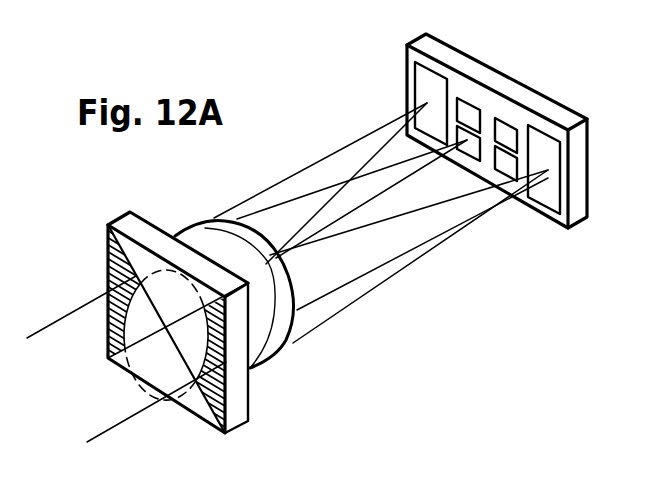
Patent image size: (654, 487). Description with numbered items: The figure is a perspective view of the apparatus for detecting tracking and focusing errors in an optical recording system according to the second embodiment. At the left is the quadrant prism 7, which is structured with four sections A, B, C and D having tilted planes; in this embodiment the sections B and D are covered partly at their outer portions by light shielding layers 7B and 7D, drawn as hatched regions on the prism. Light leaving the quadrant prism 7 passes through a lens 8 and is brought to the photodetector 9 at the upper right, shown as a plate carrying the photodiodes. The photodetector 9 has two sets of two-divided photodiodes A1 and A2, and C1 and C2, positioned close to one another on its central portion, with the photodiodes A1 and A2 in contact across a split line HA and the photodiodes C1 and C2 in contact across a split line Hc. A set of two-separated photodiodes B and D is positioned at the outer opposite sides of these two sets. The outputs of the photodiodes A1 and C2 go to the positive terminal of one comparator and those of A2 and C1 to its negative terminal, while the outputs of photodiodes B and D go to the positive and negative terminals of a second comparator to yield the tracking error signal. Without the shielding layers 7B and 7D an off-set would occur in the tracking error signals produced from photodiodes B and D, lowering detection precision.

The quadrant prism 7 is at (108, 222).
The section A of quadrant prism A is at (134, 252).
The section B of quadrant prism / photodiode B is at (433, 82).
The section C of quadrant prism C is at (193, 402).
The section D of quadrant prism / photodiode D is at (552, 187).
The light shielding layer 7B is at (100, 310).
The light shielding layer 7D is at (248, 417).
The lens 8 is at (208, 224).
The photodetector 9 is at (407, 69).
The two-divided photodiode A1 is at (465, 110).
The two-divided photodiode A2 is at (462, 143).
The split line HA is at (502, 128).
The two-divided photodiode C1 is at (510, 140).
The two-divided photodiode C2 is at (507, 173).
The split line Hc is at (552, 127).